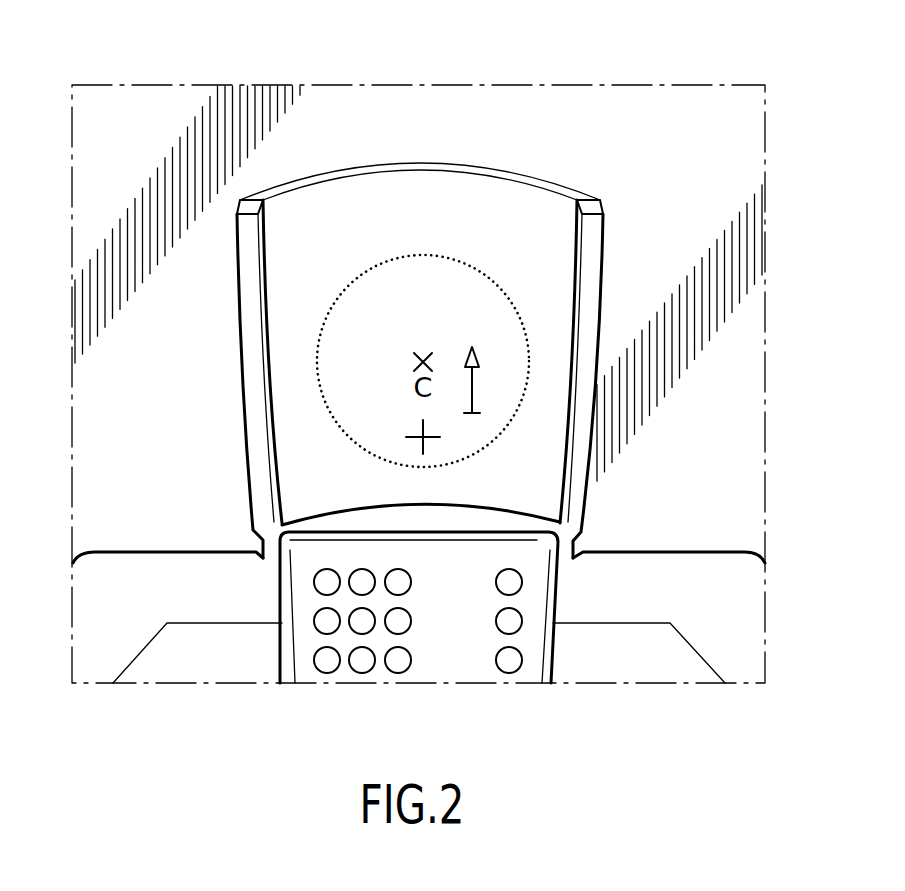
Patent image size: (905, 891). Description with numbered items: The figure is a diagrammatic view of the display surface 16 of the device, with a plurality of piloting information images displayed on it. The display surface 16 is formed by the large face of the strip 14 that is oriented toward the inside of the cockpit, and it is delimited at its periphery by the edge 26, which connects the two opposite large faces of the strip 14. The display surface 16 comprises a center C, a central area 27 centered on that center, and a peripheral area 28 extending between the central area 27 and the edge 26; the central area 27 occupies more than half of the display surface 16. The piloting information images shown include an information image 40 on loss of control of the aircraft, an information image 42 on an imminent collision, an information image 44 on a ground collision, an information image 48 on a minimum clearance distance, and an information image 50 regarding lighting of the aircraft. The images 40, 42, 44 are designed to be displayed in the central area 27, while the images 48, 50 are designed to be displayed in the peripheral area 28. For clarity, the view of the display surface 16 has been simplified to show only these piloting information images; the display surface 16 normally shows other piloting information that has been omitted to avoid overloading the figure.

The strip 14 is at (424, 160).
The edge 26 is at (290, 187).
The display surface 16 is at (295, 414).
The information image regarding lighting of the aircraft 50 is at (540, 462).
The information image on loss of control of the aircraft 40 is at (428, 293).
The peripheral area 28 is at (516, 227).
The central area 27 is at (362, 383).
The information image on a ground collision 44 is at (483, 377).
The information image on an imminent collision 42 is at (412, 440).
The information image on a minimum clearance distance 48 is at (527, 488).